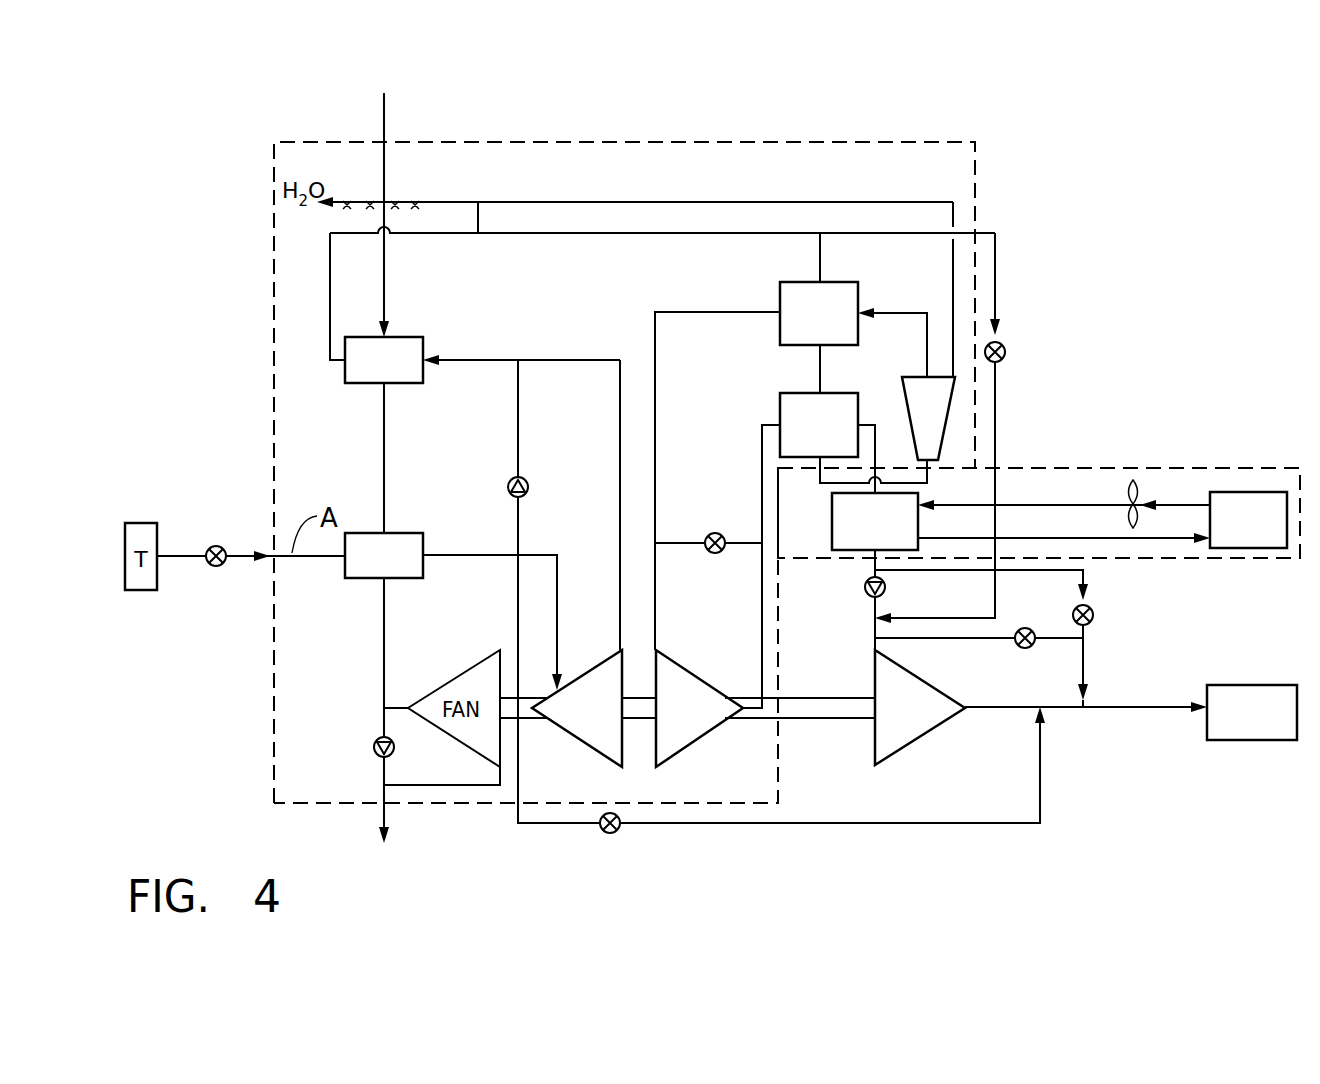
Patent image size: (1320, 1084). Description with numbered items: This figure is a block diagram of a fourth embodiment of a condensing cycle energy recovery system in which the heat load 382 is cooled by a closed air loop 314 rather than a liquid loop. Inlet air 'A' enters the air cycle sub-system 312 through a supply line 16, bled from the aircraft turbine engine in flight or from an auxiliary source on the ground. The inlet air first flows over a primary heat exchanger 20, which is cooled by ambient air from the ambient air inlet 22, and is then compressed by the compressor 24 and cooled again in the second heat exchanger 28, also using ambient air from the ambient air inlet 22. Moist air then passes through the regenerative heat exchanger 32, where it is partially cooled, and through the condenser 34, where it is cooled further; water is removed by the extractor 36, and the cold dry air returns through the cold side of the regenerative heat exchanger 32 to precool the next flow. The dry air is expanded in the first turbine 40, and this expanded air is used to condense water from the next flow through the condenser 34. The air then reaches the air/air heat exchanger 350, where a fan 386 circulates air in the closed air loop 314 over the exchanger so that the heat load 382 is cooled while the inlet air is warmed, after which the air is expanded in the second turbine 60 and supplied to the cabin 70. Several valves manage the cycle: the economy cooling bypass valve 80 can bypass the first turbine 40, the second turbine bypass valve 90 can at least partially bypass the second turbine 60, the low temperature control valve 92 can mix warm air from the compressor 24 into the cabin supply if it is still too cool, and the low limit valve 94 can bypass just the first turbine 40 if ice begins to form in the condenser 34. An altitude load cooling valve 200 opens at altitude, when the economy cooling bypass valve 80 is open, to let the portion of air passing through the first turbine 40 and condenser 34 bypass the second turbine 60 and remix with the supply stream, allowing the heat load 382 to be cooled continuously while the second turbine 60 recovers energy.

The supply line 16 is at (178, 555).
The primary heat exchanger 20 is at (358, 580).
The ambient air inlet 22 is at (387, 128).
The compressor 24 is at (605, 755).
The second heat exchanger 28 is at (358, 384).
The regenerative heat exchanger 32 is at (795, 281).
The condenser 34 is at (795, 393).
The extractor 36 is at (906, 400).
The first turbine 40 is at (672, 752).
The second turbine 60 is at (892, 752).
The cabin 70 is at (1245, 685).
The economy cooling bypass valve 80 is at (1006, 352).
The second turbine bypass valve 90 is at (1020, 649).
The low temperature control valve 92 is at (605, 834).
The low limit valve 94 is at (718, 533).
The altitude load cooling valve 200 is at (1096, 614).
The air cycle sub-system 312 is at (775, 140).
The closed air loop 314 is at (1100, 465).
The air/air heat exchanger 350 is at (855, 552).
The heat load 382 is at (1245, 492).
The fan 386 is at (1128, 482).